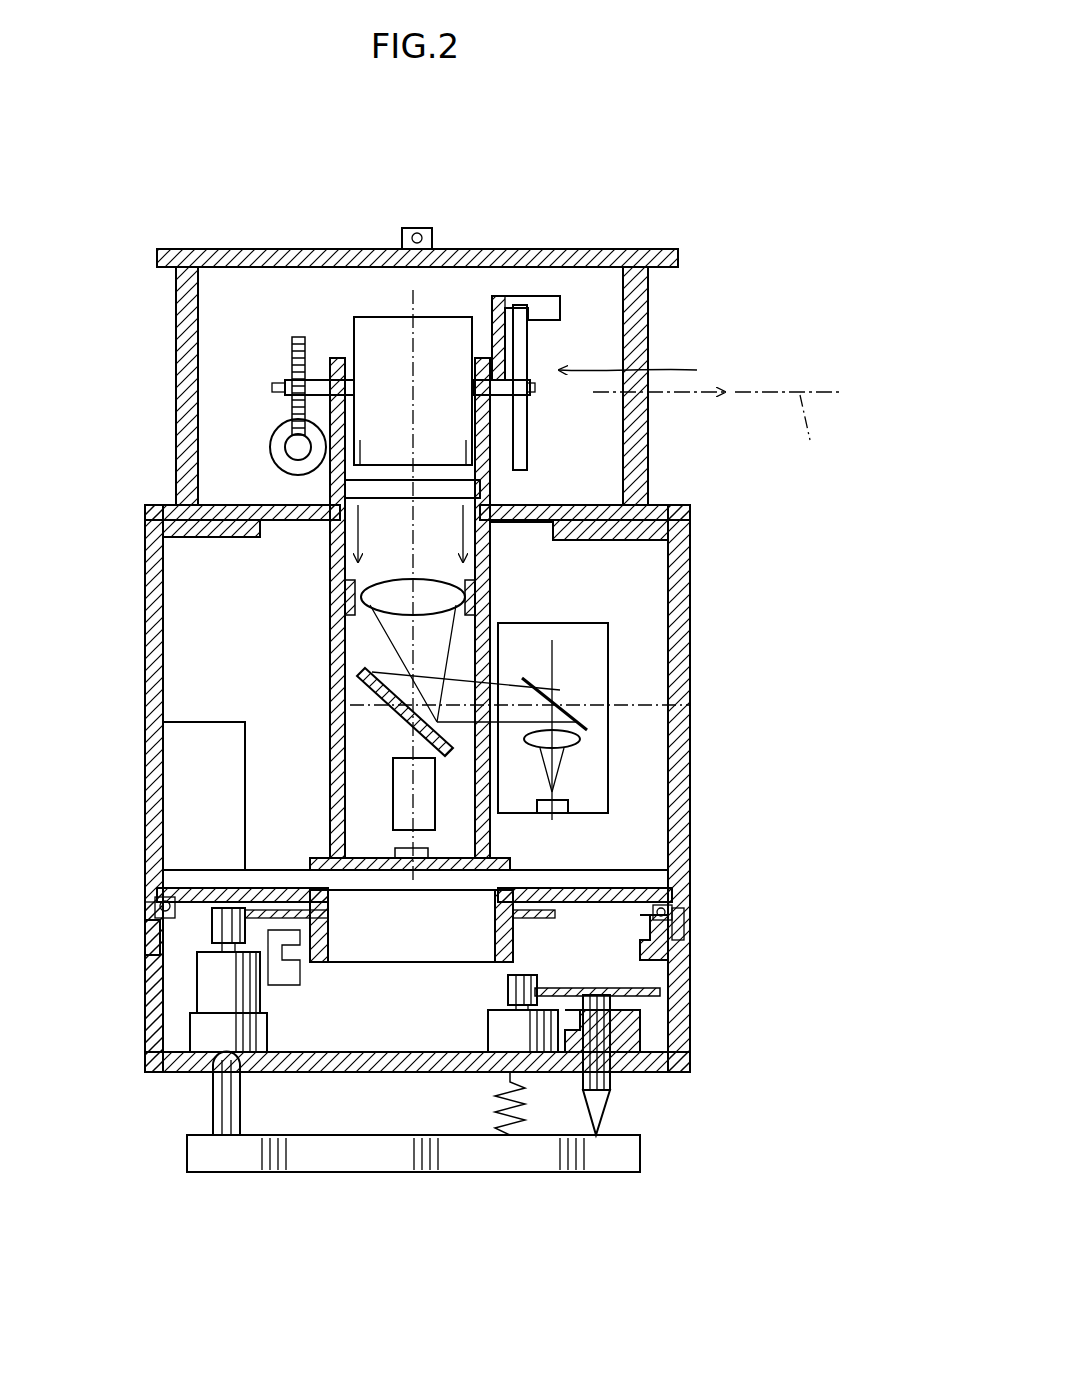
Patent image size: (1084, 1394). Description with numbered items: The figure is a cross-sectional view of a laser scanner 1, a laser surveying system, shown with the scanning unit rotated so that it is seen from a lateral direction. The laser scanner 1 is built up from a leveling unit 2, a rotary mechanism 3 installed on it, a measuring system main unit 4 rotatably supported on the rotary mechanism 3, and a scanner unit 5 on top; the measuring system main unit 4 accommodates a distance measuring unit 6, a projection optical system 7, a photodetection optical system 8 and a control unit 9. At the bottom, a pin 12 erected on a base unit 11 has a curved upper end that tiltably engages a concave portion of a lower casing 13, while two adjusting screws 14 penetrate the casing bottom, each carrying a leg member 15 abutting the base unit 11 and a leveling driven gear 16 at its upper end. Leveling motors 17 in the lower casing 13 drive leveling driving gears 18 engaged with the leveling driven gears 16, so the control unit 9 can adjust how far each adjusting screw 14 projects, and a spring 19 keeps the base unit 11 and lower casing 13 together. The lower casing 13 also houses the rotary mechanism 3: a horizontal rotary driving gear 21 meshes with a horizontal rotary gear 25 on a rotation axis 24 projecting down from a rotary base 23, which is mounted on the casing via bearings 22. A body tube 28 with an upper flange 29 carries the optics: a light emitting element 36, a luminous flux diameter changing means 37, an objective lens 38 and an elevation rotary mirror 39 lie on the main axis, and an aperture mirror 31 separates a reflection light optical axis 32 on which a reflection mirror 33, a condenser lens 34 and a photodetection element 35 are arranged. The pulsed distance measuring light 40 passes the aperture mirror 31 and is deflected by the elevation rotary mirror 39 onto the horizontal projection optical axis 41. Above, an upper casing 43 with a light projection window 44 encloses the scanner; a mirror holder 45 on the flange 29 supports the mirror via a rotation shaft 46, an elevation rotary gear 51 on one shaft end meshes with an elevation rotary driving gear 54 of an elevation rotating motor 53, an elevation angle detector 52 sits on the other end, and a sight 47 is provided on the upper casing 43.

The laser scanner 1 is at (104, 178).
The leveling unit 2 is at (655, 1102).
The rotary mechanism 3 is at (692, 992).
The measuring system main unit 4 is at (692, 778).
The scanner unit 5 is at (337, 317).
The distance measuring unit 6 is at (510, 826).
The projection optical system 7 is at (382, 796).
The photodetection optical system 8 is at (567, 690).
The control unit 9 is at (205, 722).
The base unit 11 is at (380, 1135).
The pin 12 is at (210, 1100).
The lower casing 13 is at (150, 1008).
The adjusting screw 14 is at (668, 1036).
The leg member 15 is at (582, 1112).
The leveling driven gear 16 is at (594, 988).
The leveling motor 17 is at (486, 1024).
The leveling driving gear 18 is at (506, 990).
The spring 19 is at (498, 1094).
The horizontal rotary driving gear 21 is at (162, 944).
The bearing 22 is at (684, 914).
The rotary base 23 is at (596, 896).
The rotation axis 24 is at (522, 992).
The horizontal rotary gear 25 is at (296, 896).
The body tube 28 is at (328, 637).
The flange 29 is at (262, 500).
The aperture mirror 31 is at (368, 690).
The reflection light optical axis 32 is at (515, 700).
The reflection mirror 33 is at (524, 680).
The condenser lens 34 is at (585, 745).
The photodetection element 35 is at (612, 808).
The light emitting element 36 is at (400, 858).
The luminous flux diameter changing means 37 is at (393, 776).
The objective lens 38 is at (368, 587).
The elevation rotary mirror 39 is at (395, 316).
The distance measuring light 40 is at (686, 396).
The projection optical axis 41 is at (854, 438).
The upper casing 43 is at (175, 380).
The light projection window 44 is at (650, 366).
The mirror holder 45 is at (500, 492).
The rotation shaft 46 is at (530, 395).
The sight 47 is at (433, 237).
The elevation rotary gear 51 is at (294, 374).
The elevation angle detector 52 is at (658, 362).
The elevation rotating motor 53 is at (266, 447).
The elevation rotary driving gear 54 is at (289, 433).